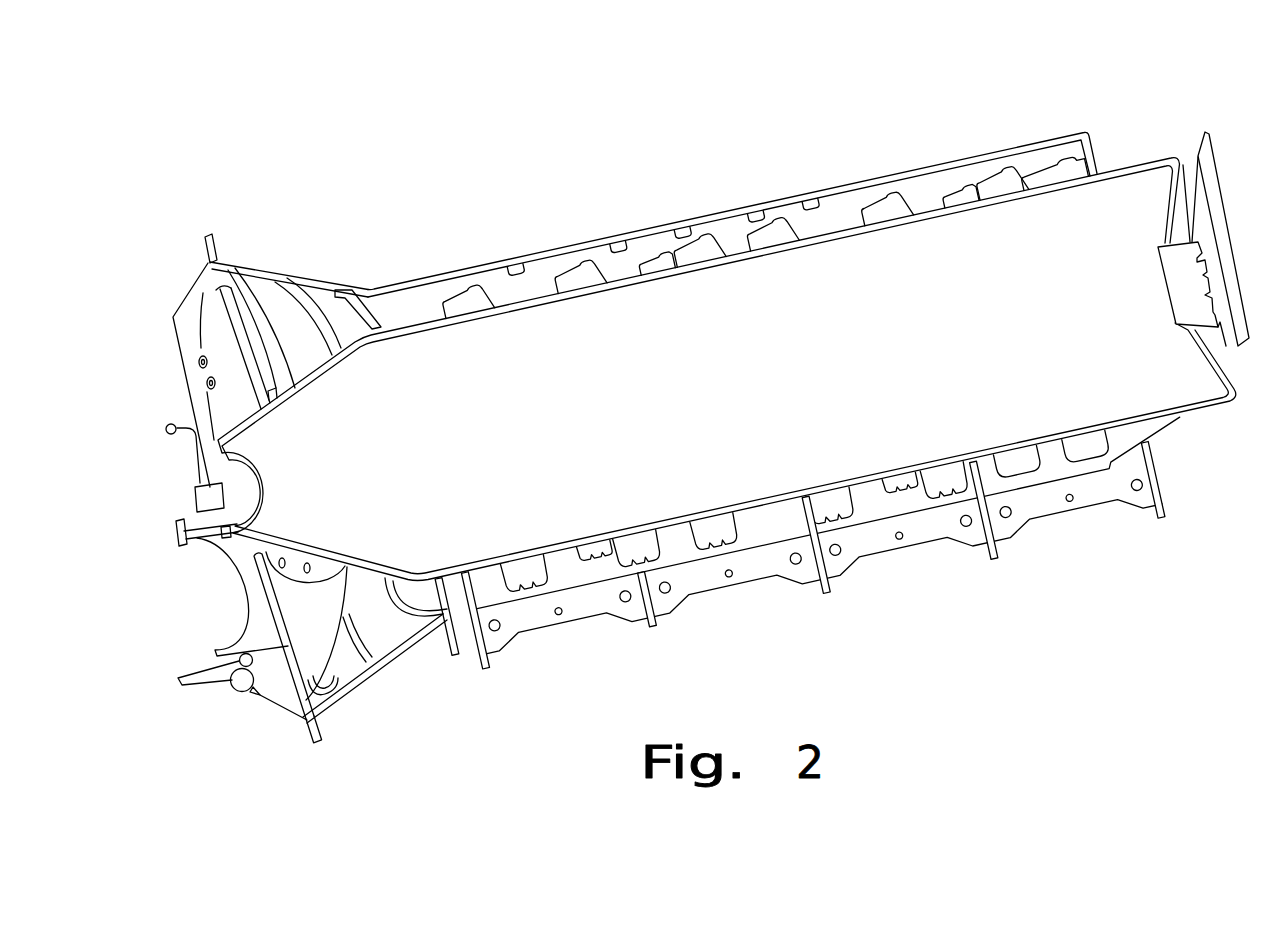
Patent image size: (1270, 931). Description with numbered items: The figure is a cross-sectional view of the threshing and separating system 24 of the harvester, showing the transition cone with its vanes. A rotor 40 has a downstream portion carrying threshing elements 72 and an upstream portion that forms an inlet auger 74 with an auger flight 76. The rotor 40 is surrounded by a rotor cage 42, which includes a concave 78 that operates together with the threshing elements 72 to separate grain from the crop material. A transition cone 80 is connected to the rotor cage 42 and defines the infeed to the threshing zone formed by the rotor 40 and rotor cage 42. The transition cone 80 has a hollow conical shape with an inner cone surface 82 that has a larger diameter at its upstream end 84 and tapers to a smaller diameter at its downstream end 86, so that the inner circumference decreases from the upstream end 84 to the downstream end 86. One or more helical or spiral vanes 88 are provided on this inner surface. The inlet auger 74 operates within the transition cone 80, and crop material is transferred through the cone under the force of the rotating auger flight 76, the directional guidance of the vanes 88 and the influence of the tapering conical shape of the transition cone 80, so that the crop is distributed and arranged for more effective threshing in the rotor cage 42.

The threshing and separating system 24 is at (540, 148).
The rotor 40 is at (932, 247).
The rotor cage 42 is at (1098, 130).
The threshing elements 72 is at (758, 223).
The inlet auger 74 is at (260, 598).
The auger flight 76 is at (317, 658).
The concave 78 is at (858, 178).
The transition cone 80 is at (250, 258).
The inner cone surface 82 is at (265, 302).
The upstream end 84 is at (301, 726).
The downstream end 86 is at (377, 287).
The helical vanes 88 is at (345, 293).